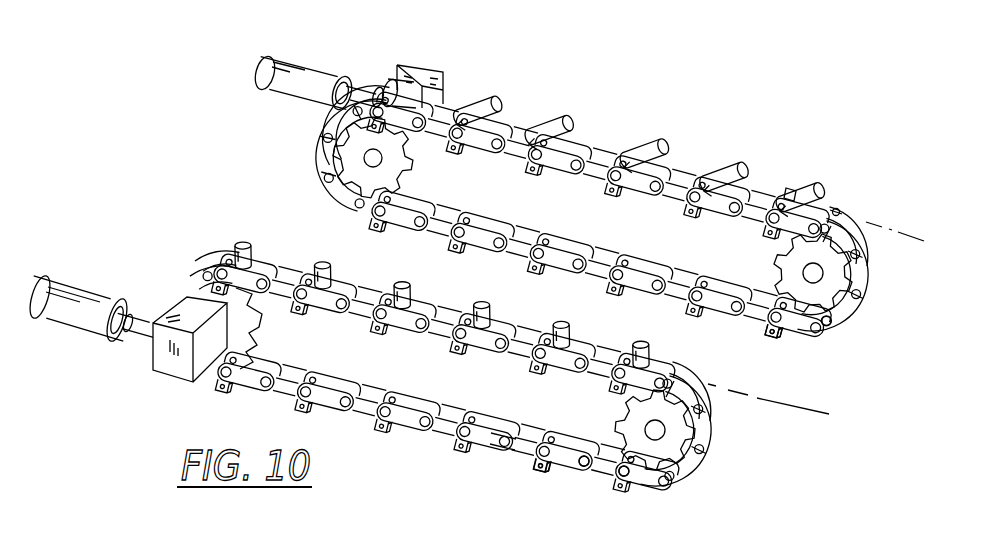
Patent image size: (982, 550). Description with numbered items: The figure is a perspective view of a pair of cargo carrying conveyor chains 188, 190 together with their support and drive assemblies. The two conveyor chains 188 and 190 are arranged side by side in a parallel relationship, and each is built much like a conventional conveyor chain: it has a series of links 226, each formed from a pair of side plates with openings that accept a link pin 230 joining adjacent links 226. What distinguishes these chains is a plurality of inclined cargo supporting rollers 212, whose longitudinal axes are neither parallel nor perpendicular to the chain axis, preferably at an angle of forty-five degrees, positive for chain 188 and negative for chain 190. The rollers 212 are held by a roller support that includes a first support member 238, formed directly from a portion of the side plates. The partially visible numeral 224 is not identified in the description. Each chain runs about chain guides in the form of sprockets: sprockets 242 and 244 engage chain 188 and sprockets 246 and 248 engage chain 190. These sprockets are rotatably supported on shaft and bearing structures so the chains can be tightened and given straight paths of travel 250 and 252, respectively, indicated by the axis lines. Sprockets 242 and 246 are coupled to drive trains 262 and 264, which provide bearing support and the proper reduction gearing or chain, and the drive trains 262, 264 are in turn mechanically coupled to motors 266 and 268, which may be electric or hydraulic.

The conveyor chain 188 is at (837, 207).
The conveyor chain 190 is at (662, 482).
The inclined cargo supporting roller 212 is at (653, 143).
The chain link 224 is at (474, 491).
The link 226 is at (757, 318).
The link pin 230 is at (822, 324).
The first support member 238 is at (795, 187).
The sprocket 242 is at (418, 165).
The sprocket 244 is at (780, 247).
The sprocket 246 is at (265, 321).
The sprocket 248 is at (615, 405).
The path of travel 250 is at (897, 233).
The path of travel 252 is at (810, 412).
The drive train 262 is at (437, 68).
The drive train 264 is at (175, 368).
The motor 266 is at (298, 60).
The motor 268 is at (68, 285).